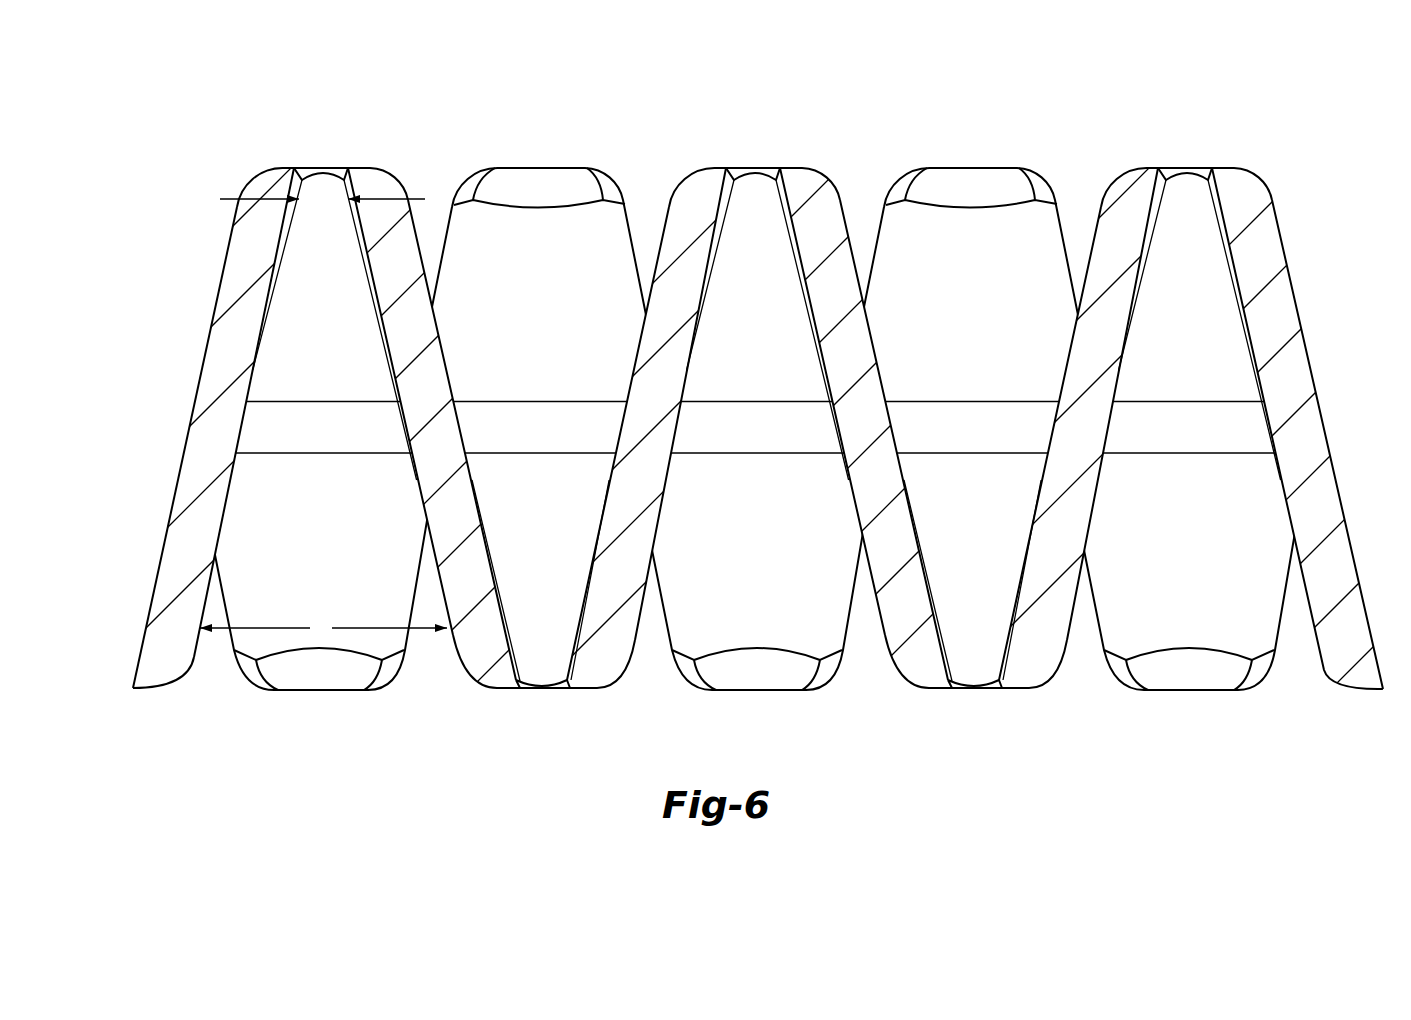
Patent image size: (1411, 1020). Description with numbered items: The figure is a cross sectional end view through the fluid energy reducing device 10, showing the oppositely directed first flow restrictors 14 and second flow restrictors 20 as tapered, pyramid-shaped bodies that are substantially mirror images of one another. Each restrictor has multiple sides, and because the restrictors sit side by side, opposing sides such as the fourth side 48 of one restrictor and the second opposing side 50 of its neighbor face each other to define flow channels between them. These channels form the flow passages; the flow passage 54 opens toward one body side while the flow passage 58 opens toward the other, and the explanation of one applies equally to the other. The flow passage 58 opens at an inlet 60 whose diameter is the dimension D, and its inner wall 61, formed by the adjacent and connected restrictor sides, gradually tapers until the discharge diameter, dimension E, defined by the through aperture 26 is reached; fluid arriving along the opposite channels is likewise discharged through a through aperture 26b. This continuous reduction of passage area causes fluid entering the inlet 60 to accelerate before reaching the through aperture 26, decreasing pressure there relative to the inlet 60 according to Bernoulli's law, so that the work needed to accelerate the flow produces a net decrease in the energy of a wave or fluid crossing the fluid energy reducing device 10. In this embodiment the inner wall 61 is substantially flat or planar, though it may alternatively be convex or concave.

The fluid energy reducing device 10 is at (877, 92).
The first flow restrictor 14 is at (237, 272).
The second flow restrictor 20 is at (477, 662).
The through aperture 26 is at (331, 168).
The through aperture 26b is at (535, 690).
The fourth side 48 is at (413, 312).
The second opposing side 50 is at (213, 357).
The flow passage 54 is at (609, 274).
The flow passage 58 is at (284, 504).
The inlet 60 is at (199, 658).
The inner wall 61 is at (275, 294).